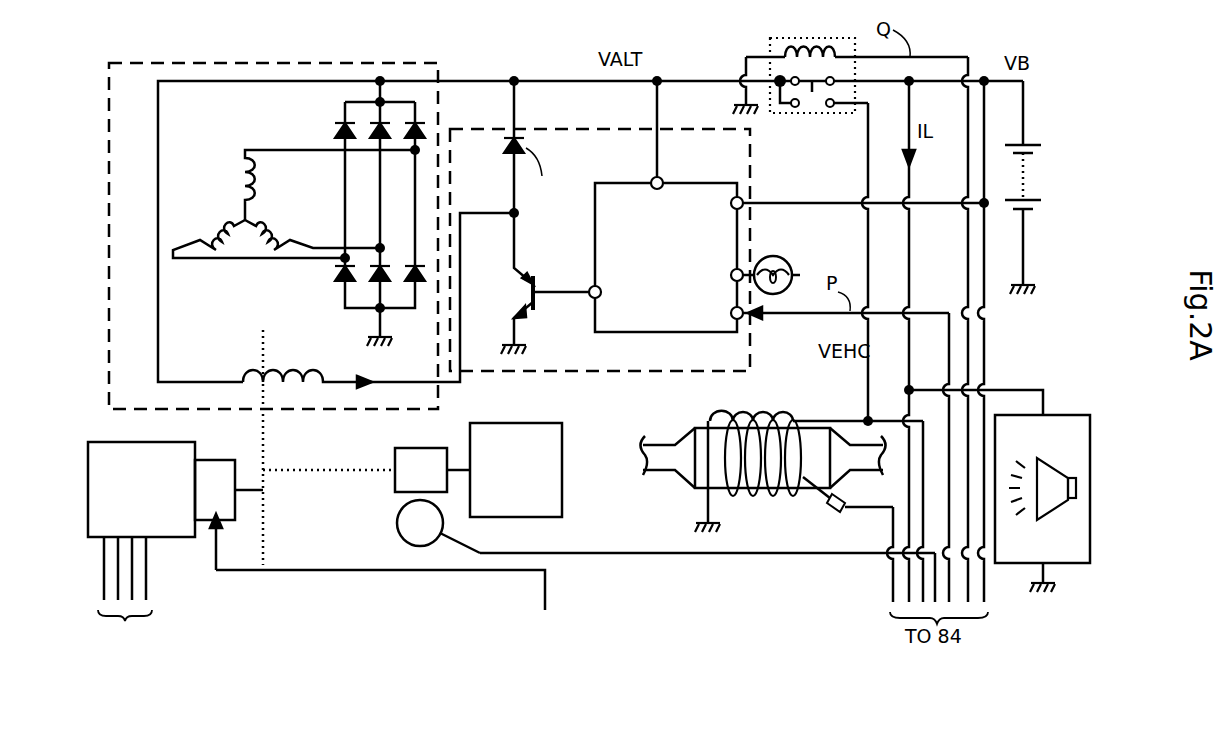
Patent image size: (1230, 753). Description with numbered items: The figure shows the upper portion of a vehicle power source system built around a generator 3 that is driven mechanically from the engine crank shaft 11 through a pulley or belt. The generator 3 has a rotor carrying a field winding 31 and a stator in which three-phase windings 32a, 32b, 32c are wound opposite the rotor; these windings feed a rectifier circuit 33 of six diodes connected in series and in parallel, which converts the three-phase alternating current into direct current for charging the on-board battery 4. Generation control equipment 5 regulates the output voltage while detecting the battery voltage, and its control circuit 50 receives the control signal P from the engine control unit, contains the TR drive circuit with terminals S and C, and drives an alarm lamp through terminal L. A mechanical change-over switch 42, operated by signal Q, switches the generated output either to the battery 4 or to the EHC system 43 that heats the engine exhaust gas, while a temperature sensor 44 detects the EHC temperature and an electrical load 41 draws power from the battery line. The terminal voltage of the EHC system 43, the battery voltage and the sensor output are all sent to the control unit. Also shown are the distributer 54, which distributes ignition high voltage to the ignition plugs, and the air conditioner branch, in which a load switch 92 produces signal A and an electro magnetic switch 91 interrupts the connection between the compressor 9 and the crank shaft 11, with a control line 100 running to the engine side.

The generator 3 is at (438, 63).
The rectifier circuit 33 is at (330, 128).
The three-phase winding 32a is at (232, 178).
The three-phase winding 32b is at (262, 212).
The three-phase winding 32c is at (205, 212).
The field winding 31 is at (243, 368).
The generation control equipment 5 is at (625, 243).
The control circuit 50 is at (614, 176).
The change-over switch 42 is at (805, 116).
The on-board battery 4 is at (1034, 140).
The EHC system 43 is at (762, 418).
The temperature sensor 44 is at (815, 508).
The electrical load 41 is at (1072, 412).
The distributer 54 is at (197, 448).
The crank shaft 11 is at (272, 530).
The control signal line 100 is at (548, 594).
The electro magnetic switch 91 is at (410, 448).
The compressor 9 is at (563, 450).
The load switch 92 is at (398, 534).